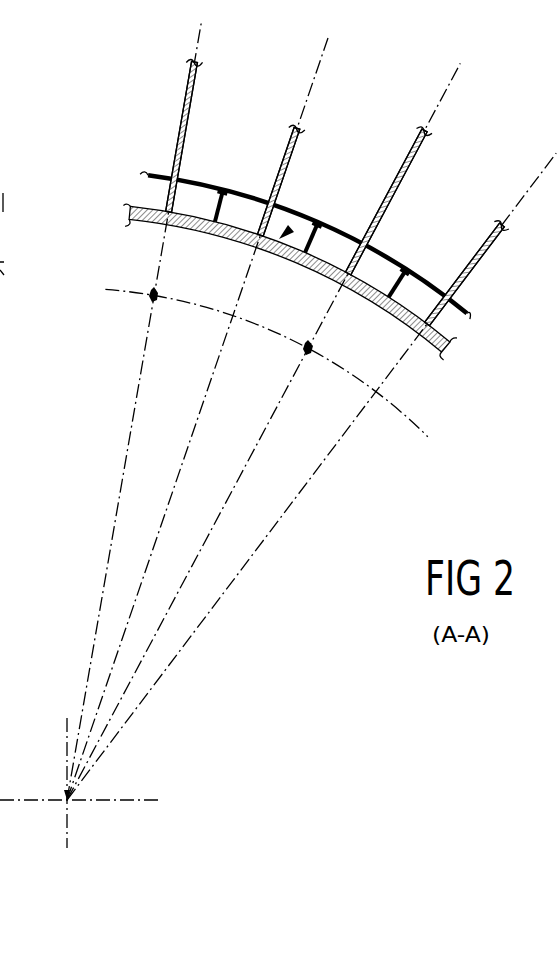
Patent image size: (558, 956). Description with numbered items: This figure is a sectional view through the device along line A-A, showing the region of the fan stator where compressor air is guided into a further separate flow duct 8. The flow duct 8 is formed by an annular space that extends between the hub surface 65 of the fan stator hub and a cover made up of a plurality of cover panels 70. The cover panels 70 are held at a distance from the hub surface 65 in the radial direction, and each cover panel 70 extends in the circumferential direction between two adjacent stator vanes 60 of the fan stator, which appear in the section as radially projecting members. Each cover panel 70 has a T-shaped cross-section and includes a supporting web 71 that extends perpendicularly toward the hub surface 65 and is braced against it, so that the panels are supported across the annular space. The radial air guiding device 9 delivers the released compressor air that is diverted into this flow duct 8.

The flow duct 8 is at (335, 245).
The radial air guiding device 9 is at (316, 346).
The stator vane 60 is at (191, 108).
The hub surface 65 is at (290, 229).
The cover panel 70 is at (197, 185).
The supporting web 71 is at (226, 205).